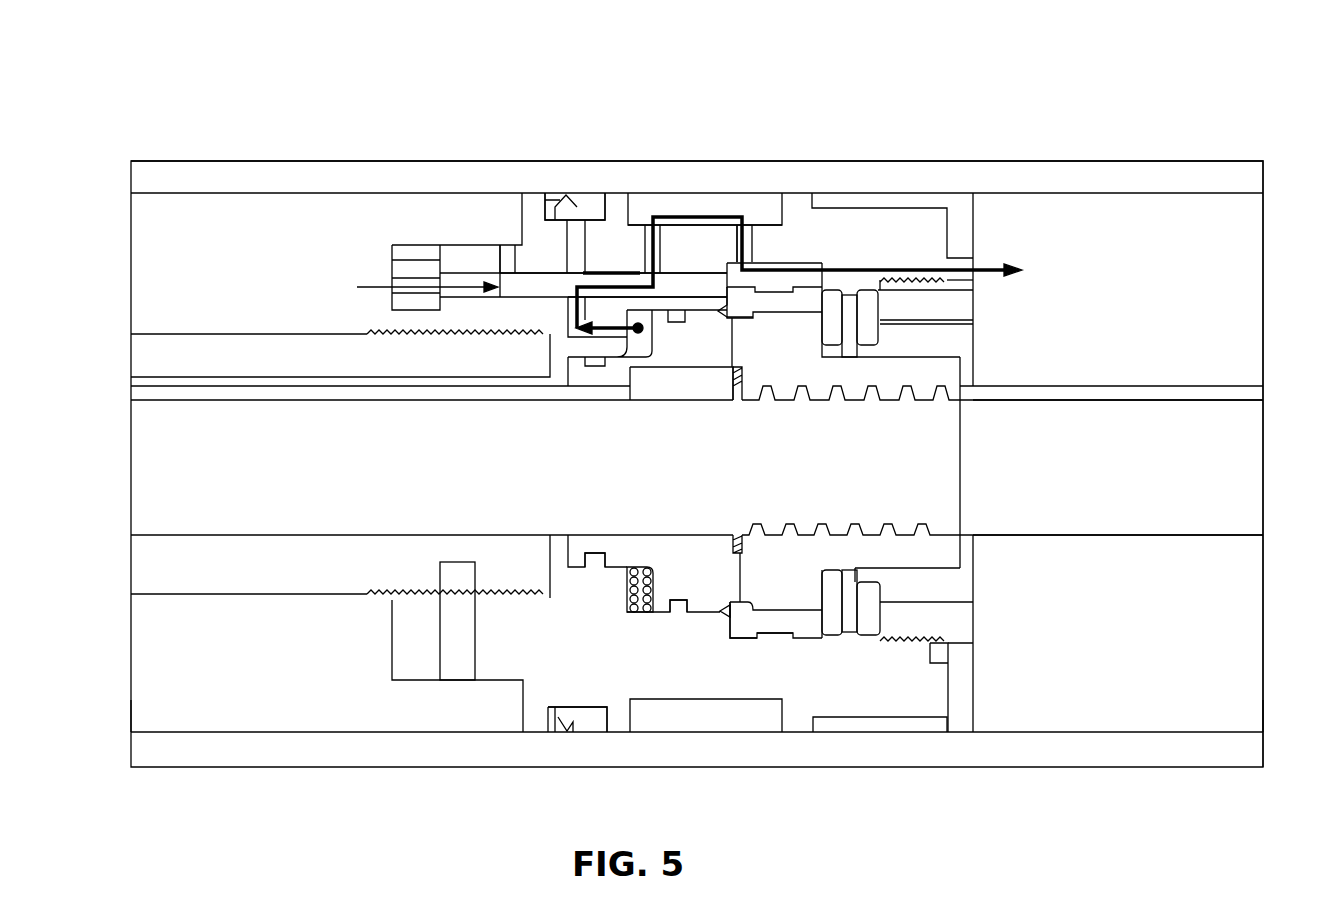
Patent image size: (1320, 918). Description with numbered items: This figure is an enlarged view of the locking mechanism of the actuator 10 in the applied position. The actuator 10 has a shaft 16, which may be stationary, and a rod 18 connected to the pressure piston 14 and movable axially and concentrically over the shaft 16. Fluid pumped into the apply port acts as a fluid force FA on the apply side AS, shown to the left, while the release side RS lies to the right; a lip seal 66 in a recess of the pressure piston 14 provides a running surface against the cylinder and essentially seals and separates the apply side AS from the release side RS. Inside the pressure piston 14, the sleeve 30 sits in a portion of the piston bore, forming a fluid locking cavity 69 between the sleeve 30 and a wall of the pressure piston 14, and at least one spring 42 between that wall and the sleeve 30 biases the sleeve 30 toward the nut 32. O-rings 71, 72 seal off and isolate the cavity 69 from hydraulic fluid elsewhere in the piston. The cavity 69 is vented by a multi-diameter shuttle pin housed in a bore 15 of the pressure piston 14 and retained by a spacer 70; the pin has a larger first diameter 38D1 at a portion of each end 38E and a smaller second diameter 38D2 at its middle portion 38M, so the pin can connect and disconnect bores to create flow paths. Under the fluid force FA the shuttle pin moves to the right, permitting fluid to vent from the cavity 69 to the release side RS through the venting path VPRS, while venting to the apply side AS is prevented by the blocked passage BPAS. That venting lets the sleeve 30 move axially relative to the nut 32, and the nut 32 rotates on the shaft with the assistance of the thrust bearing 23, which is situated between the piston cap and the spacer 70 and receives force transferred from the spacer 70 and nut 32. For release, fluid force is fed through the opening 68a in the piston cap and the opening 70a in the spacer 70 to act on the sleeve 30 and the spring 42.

The actuator 10 is at (1000, 80).
The fluid force FA is at (368, 286).
The bore 15 is at (458, 278).
The blocked passage BPAS is at (558, 273).
The end of the shuttle pin 38E is at (537, 189).
The first diameter 38D1 is at (499, 230).
The pressure piston 14 is at (534, 250).
The lip seal 66 is at (582, 205).
The second diameter 38D2 is at (602, 251).
The middle portion 38M is at (623, 272).
The venting path VPRS is at (655, 215).
The thrust bearing 23 is at (851, 290).
The shaft 16 is at (1063, 518).
The rod 18 is at (318, 587).
The apply side AS is at (286, 704).
The release side RS is at (1090, 698).
The O-ring 71 is at (616, 609).
The fluid locking cavity 69 is at (593, 562).
The spring 42 is at (636, 612).
The O-ring 72 is at (677, 612).
The sleeve 30 is at (705, 612).
The spacer 70 is at (743, 638).
The opening 70a is at (773, 636).
The nut 32 is at (797, 603).
The opening 68a is at (968, 660).